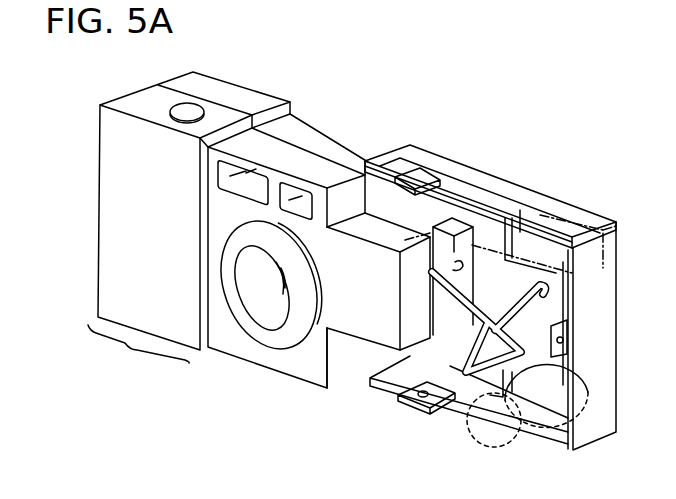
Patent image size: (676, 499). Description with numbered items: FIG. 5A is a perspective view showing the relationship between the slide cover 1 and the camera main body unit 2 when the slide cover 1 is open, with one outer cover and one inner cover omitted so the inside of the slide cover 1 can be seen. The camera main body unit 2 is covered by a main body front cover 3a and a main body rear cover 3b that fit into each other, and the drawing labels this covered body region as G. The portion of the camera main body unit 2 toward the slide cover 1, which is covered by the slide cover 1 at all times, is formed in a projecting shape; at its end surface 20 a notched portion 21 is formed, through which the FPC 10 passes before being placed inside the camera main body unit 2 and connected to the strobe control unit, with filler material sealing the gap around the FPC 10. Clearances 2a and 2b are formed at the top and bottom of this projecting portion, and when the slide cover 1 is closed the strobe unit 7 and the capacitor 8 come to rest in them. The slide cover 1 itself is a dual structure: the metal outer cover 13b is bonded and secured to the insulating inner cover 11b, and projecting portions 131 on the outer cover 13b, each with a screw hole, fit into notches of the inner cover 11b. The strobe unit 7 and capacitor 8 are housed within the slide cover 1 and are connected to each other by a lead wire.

The slide cover 1 is at (522, 183).
The camera main body unit 2 is at (342, 138).
The clearance 2a is at (350, 200).
The clearance 2b is at (338, 399).
The main body front cover 3a is at (132, 105).
The main body rear cover 3b is at (262, 103).
The strobe unit 7 is at (575, 209).
The capacitor 8 is at (512, 441).
The FPC 10 is at (480, 372).
The inner cover 11b is at (414, 372).
The outer cover 13b is at (478, 188).
The end surface 20 is at (445, 313).
The notched portion 21 is at (435, 275).
The projecting portion 131 is at (413, 412).
The grip portion G is at (138, 353).